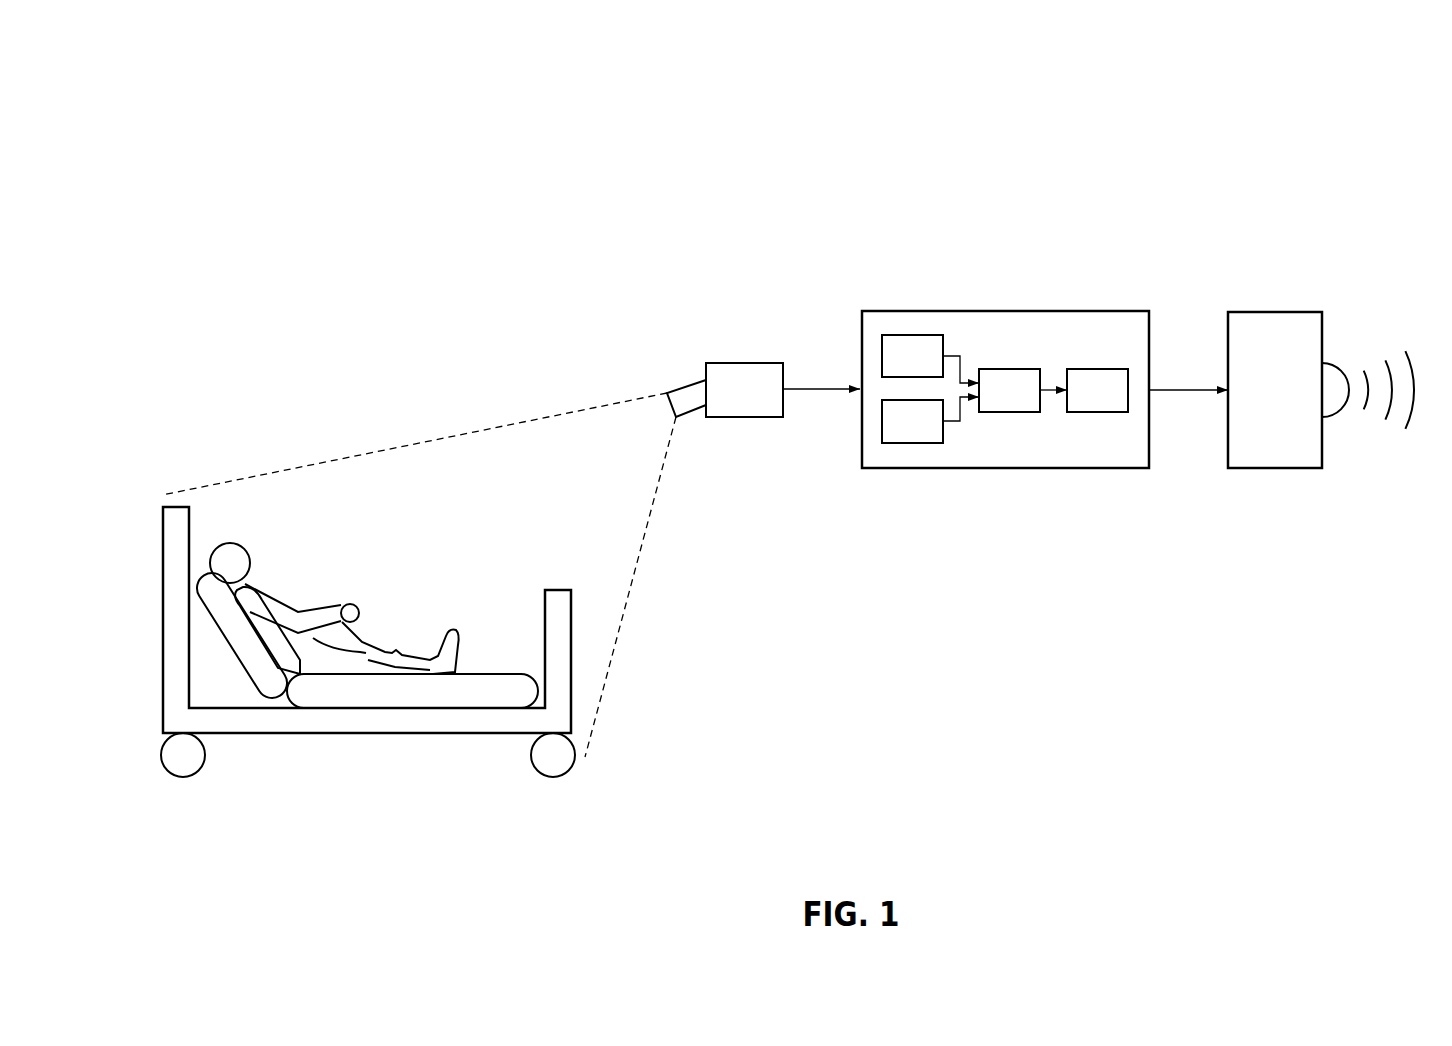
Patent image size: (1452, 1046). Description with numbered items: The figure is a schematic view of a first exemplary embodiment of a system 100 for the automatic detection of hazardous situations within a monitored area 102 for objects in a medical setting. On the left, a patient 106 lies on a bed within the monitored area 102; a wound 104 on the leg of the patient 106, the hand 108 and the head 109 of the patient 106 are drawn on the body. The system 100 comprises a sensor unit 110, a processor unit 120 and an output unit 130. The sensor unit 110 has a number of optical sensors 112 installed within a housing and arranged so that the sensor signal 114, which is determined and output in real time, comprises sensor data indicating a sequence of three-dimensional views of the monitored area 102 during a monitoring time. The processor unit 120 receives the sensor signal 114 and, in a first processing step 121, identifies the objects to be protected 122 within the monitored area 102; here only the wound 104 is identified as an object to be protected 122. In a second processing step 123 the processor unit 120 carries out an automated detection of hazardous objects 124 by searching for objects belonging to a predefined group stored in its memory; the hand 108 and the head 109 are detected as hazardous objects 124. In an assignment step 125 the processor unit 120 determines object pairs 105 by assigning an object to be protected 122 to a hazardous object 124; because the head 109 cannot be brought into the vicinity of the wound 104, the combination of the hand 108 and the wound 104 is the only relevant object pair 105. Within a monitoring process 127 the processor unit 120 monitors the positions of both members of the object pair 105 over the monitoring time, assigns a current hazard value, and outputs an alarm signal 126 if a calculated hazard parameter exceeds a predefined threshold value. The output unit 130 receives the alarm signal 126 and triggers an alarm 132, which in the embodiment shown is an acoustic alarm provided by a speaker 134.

The system 100 is at (1258, 212).
The monitored area 102 is at (262, 503).
The wound 104 is at (382, 643).
The object pair 105 is at (273, 823).
The patient 106 is at (256, 603).
The hand 108 is at (349, 604).
The head 109 is at (212, 555).
The sensor unit 110 is at (739, 362).
The optical sensors 112 is at (688, 390).
The sensor signal 114 is at (820, 388).
The processor unit 120 is at (1021, 328).
The first processing step 121 is at (891, 369).
The object to be protected 122 is at (382, 664).
The second processing step 123 is at (891, 434).
The hazardous object 124 is at (353, 632).
The assignment step 125 is at (988, 404).
The alarm signal 126 is at (1190, 388).
The monitoring process 127 is at (1076, 404).
The output unit 130 is at (1252, 403).
The alarm 132 is at (1428, 387).
The speaker 134 is at (1340, 365).